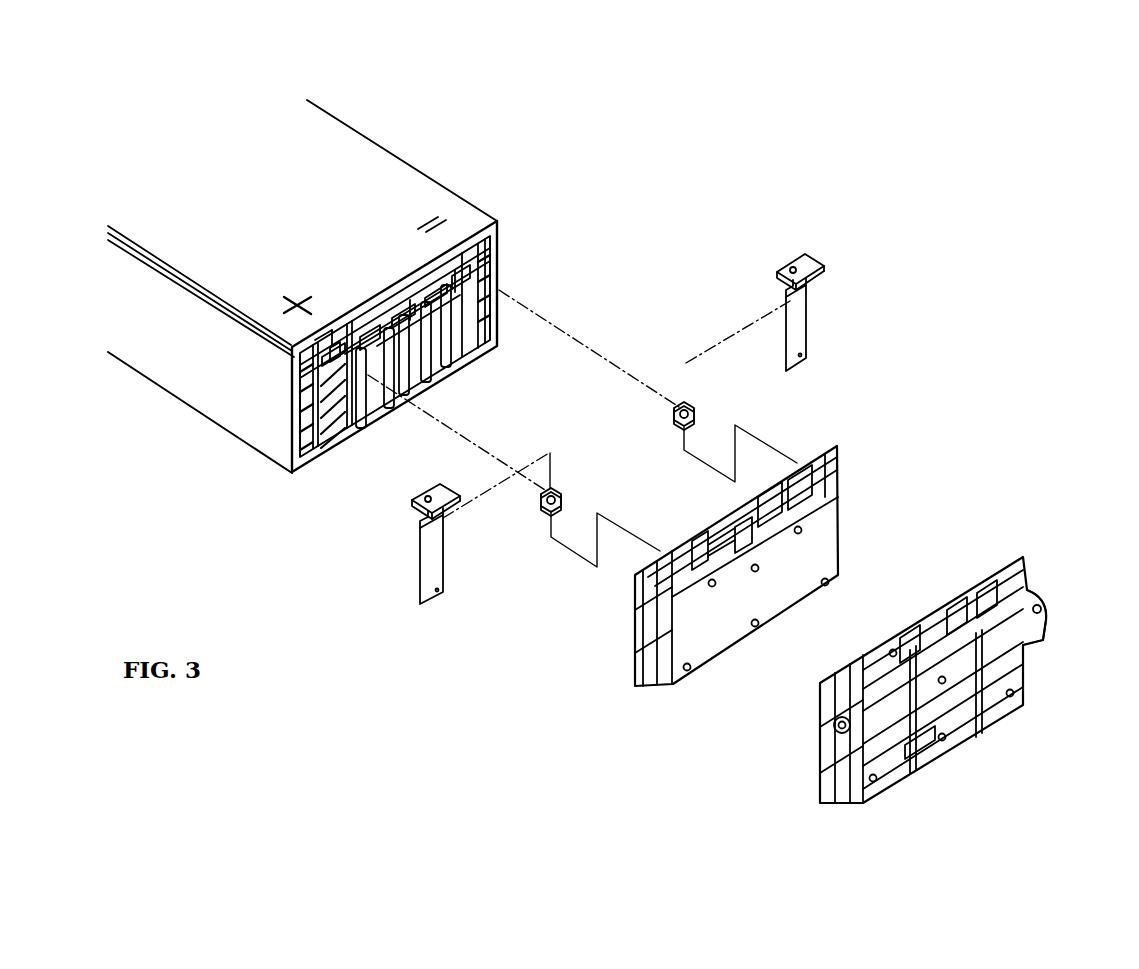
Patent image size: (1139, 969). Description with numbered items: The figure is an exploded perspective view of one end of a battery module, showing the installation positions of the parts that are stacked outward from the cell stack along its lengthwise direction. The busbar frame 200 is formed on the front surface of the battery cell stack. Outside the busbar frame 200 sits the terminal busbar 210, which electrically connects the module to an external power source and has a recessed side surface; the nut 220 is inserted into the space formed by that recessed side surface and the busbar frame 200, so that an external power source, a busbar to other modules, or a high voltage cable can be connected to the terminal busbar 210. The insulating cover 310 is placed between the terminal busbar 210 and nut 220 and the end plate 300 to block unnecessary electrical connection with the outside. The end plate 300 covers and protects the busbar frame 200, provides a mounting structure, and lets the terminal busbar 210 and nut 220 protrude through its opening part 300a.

The busbar frame 200 is at (503, 246).
The terminal busbar 210 is at (816, 257).
The nut 220 is at (683, 401).
The end plate 300 is at (976, 633).
The opening part 300a is at (1032, 628).
The insulating cover 310 is at (837, 446).